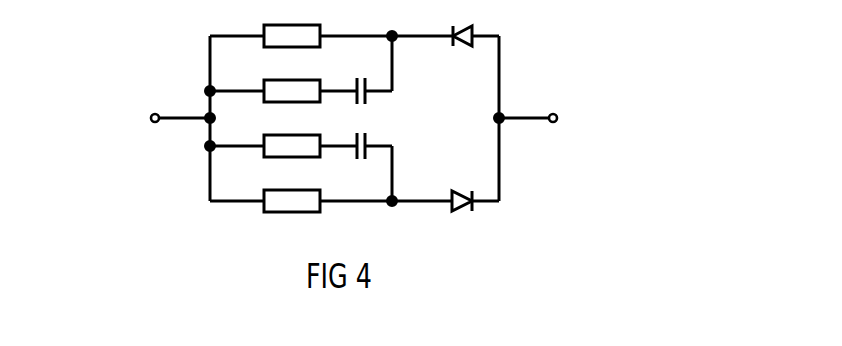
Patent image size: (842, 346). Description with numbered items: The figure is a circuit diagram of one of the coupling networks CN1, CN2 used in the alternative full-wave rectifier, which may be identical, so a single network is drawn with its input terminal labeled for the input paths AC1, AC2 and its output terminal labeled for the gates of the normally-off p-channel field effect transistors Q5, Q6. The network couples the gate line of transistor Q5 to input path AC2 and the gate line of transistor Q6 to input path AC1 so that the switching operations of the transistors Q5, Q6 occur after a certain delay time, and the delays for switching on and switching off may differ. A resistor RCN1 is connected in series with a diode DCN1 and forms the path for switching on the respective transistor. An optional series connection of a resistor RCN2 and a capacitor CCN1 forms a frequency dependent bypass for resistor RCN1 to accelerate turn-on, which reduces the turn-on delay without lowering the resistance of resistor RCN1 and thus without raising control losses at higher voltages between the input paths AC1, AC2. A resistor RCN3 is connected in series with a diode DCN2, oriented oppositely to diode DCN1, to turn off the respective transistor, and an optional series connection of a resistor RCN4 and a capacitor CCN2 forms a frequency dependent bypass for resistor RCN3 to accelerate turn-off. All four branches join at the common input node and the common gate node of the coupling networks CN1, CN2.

The coupling network CN1 is at (393, 106).
The coupling network CN2 is at (393, 106).
The resistor RCN1 is at (301, 24).
The resistor RCN2 is at (283, 79).
The resistor RCN3 is at (301, 188).
The resistor RCN4 is at (283, 134).
The capacitor CCN1 is at (365, 79).
The capacitor CCN2 is at (365, 160).
The diode DCN1 is at (445, 23).
The diode DCN2 is at (445, 185).
The input path AC1 is at (126, 121).
The input path AC2 is at (126, 121).
The normally-off p-channel field effect transistor Q5 is at (622, 121).
The normally-off p-channel field effect transistor Q6 is at (622, 121).